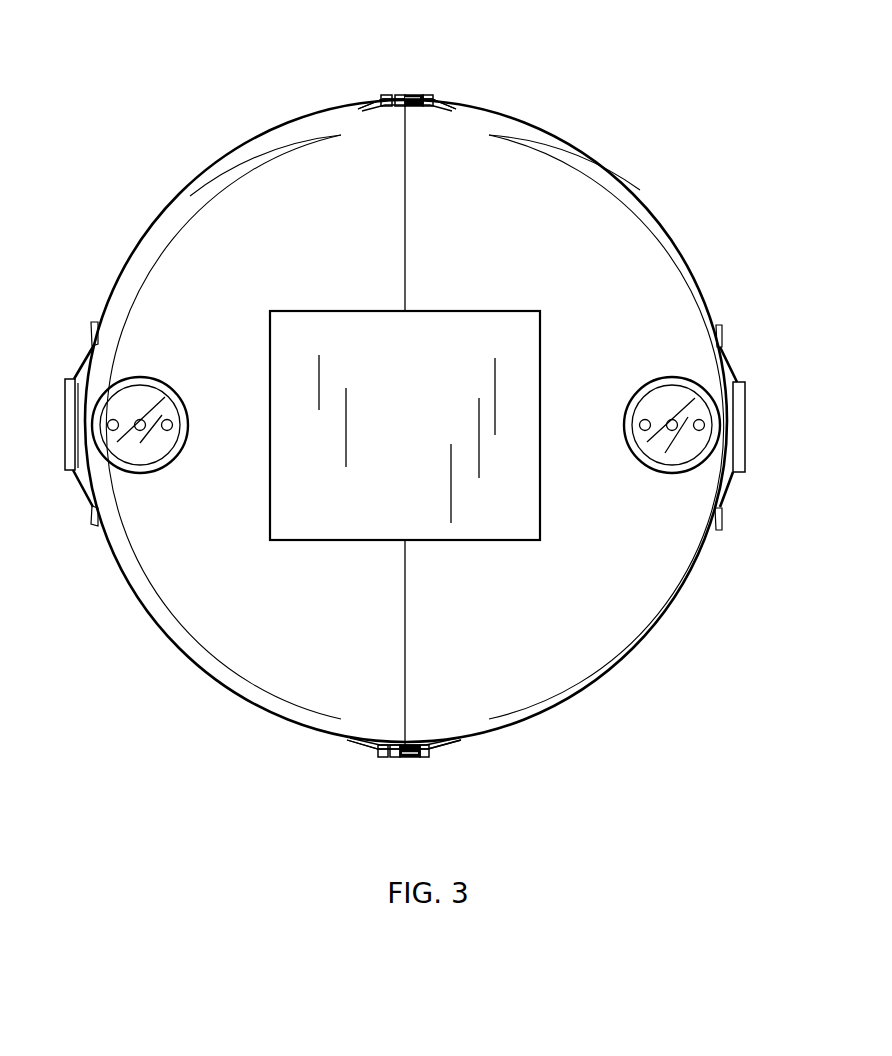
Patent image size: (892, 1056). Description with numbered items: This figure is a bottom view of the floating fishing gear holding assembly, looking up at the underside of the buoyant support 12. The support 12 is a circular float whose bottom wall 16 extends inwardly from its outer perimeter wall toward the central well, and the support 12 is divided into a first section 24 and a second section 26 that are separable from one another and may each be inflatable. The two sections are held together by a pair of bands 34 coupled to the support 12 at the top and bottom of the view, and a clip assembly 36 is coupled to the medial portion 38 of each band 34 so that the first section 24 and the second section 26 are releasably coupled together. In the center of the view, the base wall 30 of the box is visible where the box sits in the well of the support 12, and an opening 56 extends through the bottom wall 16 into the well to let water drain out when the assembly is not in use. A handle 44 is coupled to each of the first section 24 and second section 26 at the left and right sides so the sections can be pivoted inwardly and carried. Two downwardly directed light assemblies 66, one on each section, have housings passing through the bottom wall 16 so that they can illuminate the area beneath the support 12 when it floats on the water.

The buoyant support 12 is at (613, 688).
The bottom wall 16 is at (551, 204).
The first section 24 is at (488, 141).
The second section 26 is at (270, 164).
The base wall 30 is at (503, 338).
The bands 34 is at (366, 104).
The clip assemblies 36 is at (416, 94).
The medial portion 38 is at (366, 419).
The handles 44 is at (73, 378).
The opening 56 is at (281, 335).
The downwardly directed light assembly 66 is at (145, 445).